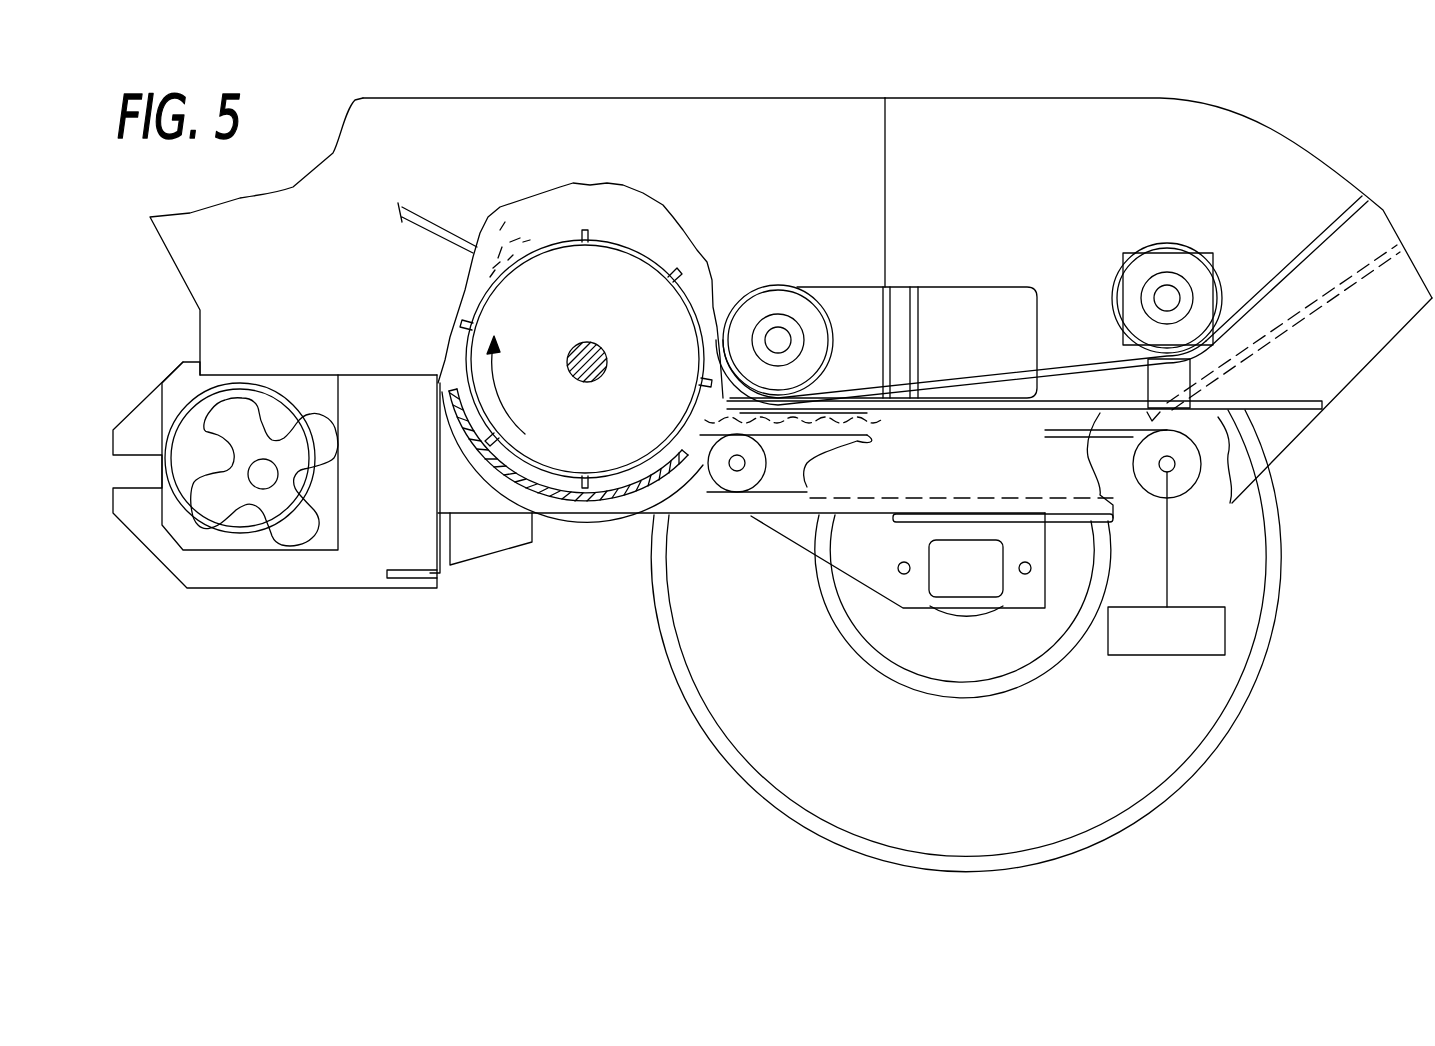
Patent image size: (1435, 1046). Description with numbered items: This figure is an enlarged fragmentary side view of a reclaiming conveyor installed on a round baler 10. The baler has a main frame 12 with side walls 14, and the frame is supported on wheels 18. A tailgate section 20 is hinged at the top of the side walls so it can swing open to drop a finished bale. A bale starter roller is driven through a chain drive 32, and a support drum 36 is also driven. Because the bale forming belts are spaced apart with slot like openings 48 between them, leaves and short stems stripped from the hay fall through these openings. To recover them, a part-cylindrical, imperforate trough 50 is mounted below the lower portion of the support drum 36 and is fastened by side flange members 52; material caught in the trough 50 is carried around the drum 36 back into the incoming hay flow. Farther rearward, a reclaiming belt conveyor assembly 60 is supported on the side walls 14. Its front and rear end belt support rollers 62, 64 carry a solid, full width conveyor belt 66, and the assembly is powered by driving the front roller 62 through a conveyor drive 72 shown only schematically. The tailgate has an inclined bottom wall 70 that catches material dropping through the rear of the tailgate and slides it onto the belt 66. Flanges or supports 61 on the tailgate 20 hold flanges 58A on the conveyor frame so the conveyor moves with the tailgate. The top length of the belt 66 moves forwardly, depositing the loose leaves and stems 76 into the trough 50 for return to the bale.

The baler 10 is at (316, 590).
The main frame 12 is at (1003, 582).
The side walls 14 is at (728, 125).
The wheels 18 is at (690, 712).
The tailgate section 20 is at (982, 138).
The chain drive 32 is at (1090, 355).
The support drum 36 is at (643, 283).
The slot like openings 48 is at (1313, 252).
The trough 50 is at (635, 497).
The side flange members 52 is at (548, 507).
The flanges 58A is at (1243, 410).
The reclaiming belt conveyor assembly 60 is at (1129, 500).
The flanges or supports 61 is at (1210, 400).
The front end belt support roller 62 is at (763, 502).
The rear end belt support roller 64 is at (1190, 472).
The conveyor belt 66 is at (803, 437).
The inclined bottom wall 70 is at (1297, 313).
The conveyor drive 72 is at (1192, 657).
The leaves and stems 76 is at (815, 415).